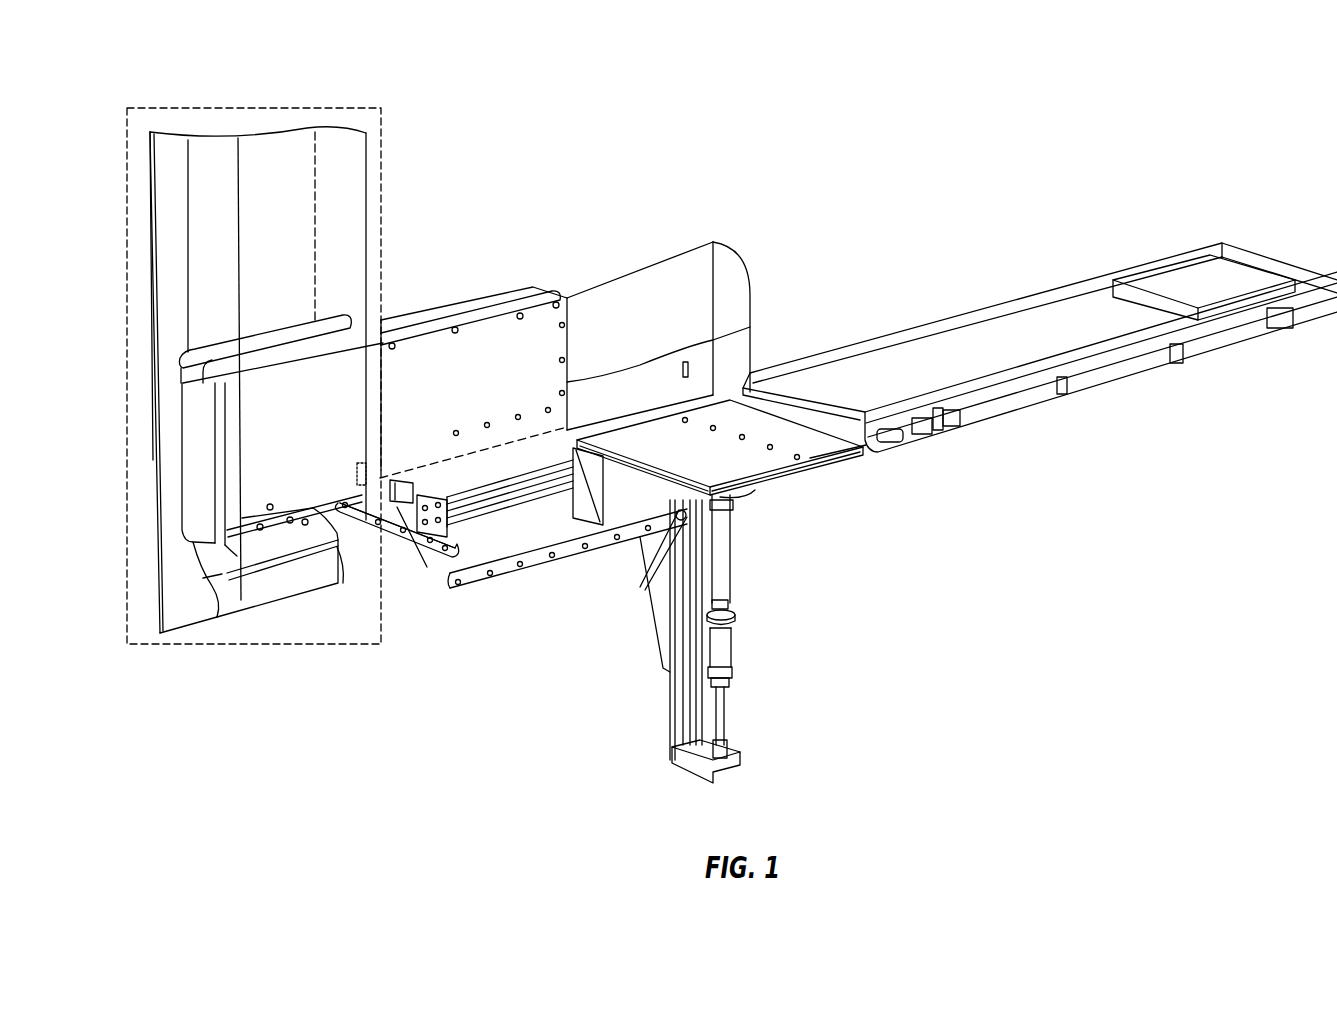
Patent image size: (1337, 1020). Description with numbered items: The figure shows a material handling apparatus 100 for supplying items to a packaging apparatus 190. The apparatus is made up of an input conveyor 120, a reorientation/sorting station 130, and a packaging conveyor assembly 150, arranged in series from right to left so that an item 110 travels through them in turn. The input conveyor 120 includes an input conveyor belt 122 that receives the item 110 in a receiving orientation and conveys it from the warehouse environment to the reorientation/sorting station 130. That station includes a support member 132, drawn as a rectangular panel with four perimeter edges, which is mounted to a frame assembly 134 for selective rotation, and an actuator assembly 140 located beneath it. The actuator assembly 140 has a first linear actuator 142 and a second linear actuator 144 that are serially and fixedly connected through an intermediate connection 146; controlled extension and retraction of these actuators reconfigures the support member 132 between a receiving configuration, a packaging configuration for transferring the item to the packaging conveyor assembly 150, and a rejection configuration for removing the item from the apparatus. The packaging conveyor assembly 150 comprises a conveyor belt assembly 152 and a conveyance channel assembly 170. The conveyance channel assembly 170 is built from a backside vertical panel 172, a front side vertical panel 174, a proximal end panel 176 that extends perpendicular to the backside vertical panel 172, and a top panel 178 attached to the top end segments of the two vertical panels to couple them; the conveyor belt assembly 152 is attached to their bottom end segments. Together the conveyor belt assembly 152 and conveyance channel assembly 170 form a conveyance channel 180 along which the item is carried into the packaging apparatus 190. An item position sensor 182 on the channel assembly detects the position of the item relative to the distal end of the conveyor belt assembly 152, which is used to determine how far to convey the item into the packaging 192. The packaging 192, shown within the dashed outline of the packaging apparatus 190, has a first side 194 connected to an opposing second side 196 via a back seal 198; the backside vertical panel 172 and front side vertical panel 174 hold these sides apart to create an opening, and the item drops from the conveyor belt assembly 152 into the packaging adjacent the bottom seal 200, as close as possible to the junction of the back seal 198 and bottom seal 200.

The material handling apparatus 100 is at (980, 115).
The item 110 is at (1222, 268).
The input conveyor 120 is at (1160, 360).
The input conveyor belt 122 is at (1028, 320).
The reorientation/sorting station 130 is at (780, 487).
The support member 132 is at (817, 447).
The frame assembly 134 is at (570, 548).
The actuator assembly 140 is at (710, 600).
The first linear actuator 142 is at (731, 535).
The second linear actuator 144 is at (732, 660).
The intermediate connection 146 is at (736, 622).
The packaging conveyor assembly 150 is at (760, 236).
The conveyor belt assembly 152 is at (475, 465).
The conveyance channel assembly 170 is at (648, 258).
The backside vertical panel 172 is at (608, 290).
The front side vertical panel 174 is at (500, 343).
The proximal end panel 176 is at (755, 296).
The top panel 178 is at (517, 297).
The conveyance channel 180 is at (715, 333).
The item position sensor 182 is at (405, 505).
The packaging apparatus 190 is at (260, 672).
The packaging 192 is at (210, 155).
The first side 194 is at (367, 237).
The second side 196 is at (317, 187).
The back seal 198 is at (152, 300).
The bottom seal 200 is at (280, 605).